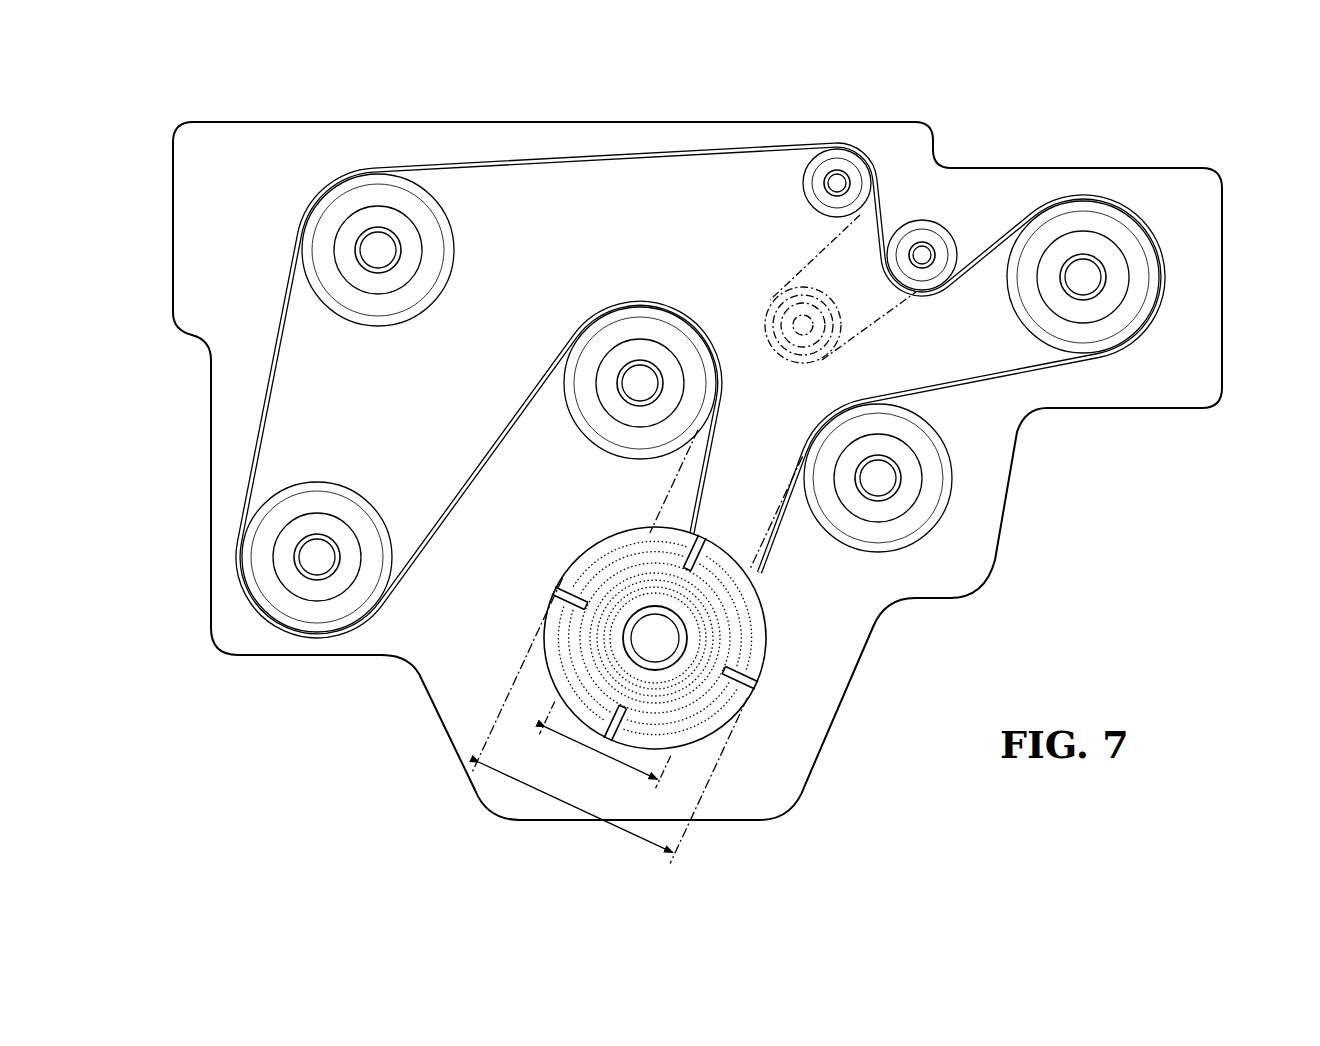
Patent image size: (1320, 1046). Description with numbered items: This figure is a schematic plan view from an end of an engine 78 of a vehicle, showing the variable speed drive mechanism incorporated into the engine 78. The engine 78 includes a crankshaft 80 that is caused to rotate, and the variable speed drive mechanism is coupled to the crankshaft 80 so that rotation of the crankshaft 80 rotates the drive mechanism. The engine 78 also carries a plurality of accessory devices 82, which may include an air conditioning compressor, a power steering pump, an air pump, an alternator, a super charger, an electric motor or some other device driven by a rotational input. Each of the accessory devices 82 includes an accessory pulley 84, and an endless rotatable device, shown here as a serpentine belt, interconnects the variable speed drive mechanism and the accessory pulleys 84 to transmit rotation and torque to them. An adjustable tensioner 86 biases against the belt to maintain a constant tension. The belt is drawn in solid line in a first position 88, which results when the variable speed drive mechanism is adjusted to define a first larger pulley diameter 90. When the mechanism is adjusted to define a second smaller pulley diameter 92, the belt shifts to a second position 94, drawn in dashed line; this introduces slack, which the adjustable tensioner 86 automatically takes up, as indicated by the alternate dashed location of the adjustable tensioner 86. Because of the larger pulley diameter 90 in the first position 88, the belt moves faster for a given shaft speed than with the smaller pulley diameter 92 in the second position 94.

The engine 78 is at (988, 134).
The crankshaft 80 is at (655, 640).
The accessory devices 82 is at (350, 214).
The accessory pulley 84 is at (400, 185).
The adjustable tensioner 86 is at (687, 523).
The first position 88 is at (888, 222).
The first larger pulley diameter 90 is at (545, 797).
The second smaller pulley diameter 92 is at (590, 756).
The second position 94 is at (870, 340).